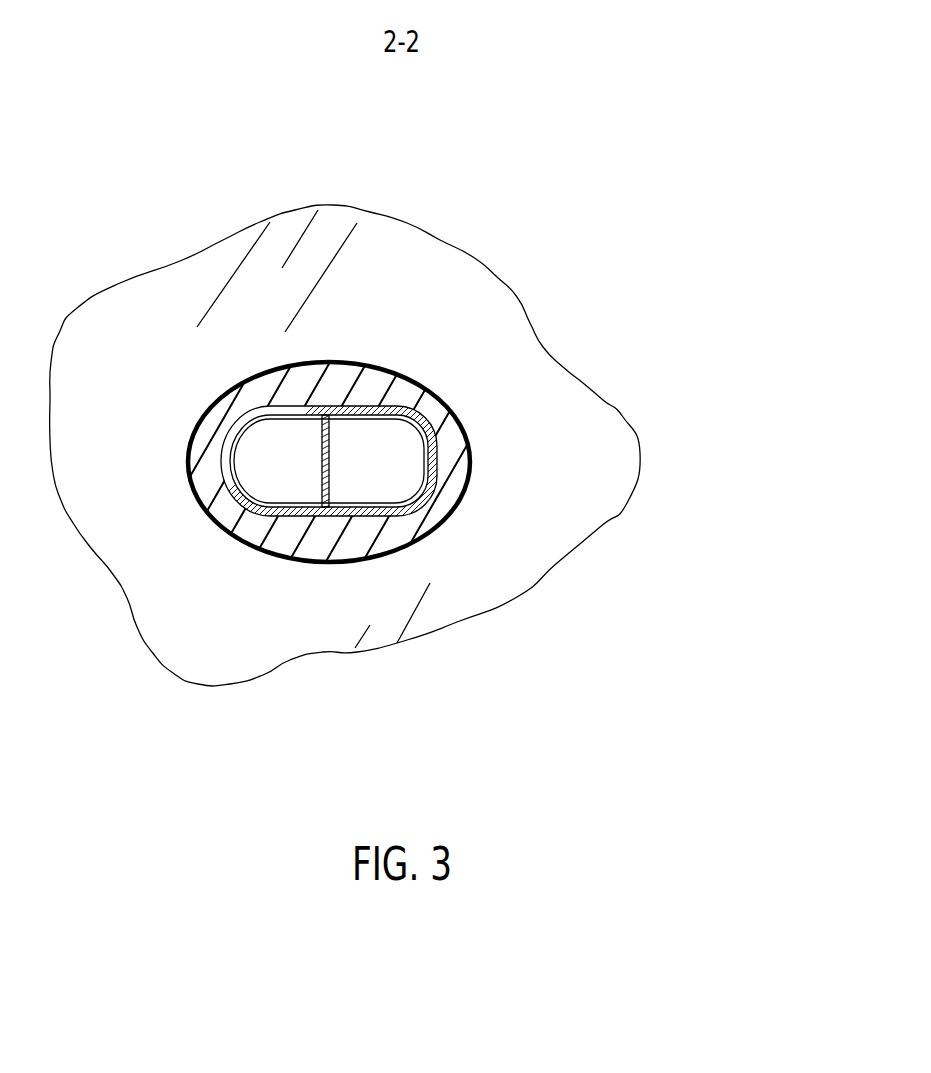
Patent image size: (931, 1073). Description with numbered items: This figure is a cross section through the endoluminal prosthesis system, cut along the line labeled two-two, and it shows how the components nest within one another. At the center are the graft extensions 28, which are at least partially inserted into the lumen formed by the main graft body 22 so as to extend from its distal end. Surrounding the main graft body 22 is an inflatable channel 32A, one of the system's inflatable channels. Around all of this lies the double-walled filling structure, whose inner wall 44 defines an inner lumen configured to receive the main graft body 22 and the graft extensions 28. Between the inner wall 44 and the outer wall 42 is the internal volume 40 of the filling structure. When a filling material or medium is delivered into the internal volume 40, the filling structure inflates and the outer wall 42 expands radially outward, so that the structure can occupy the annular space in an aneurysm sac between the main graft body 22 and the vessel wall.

The main graft body 22 is at (399, 378).
The graft extensions 28 is at (427, 463).
The inflatable channel 32A is at (350, 380).
The internal volume 40 is at (143, 388).
The outer wall 42 is at (515, 598).
The inner wall 44 is at (405, 410).